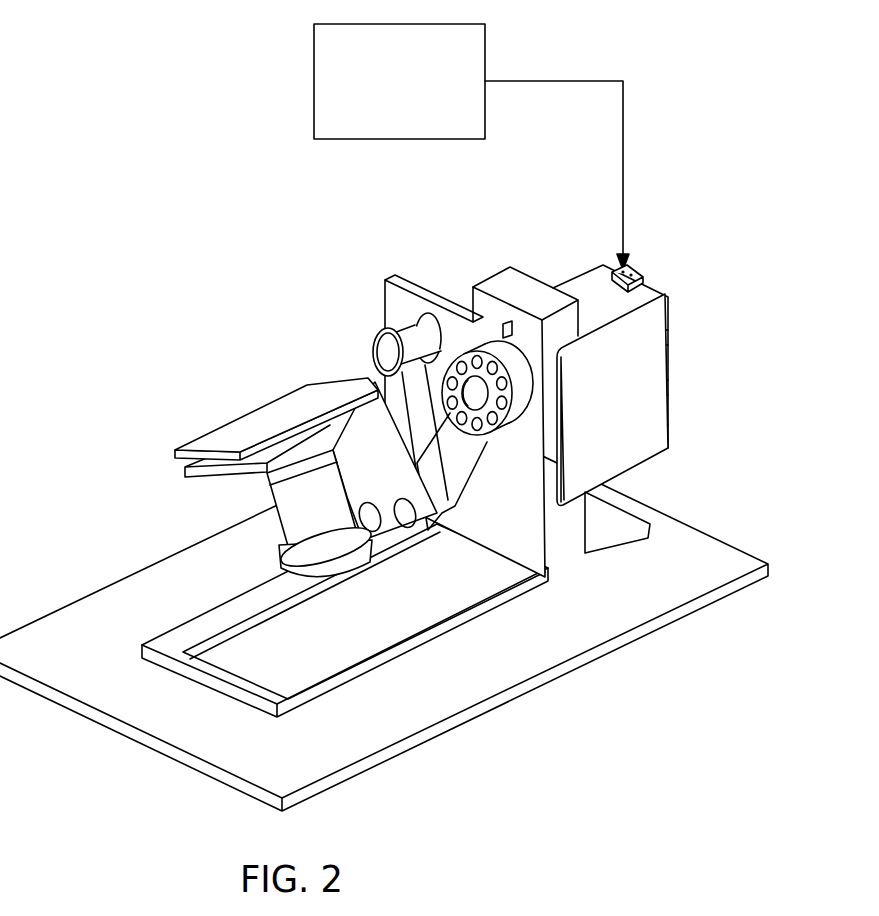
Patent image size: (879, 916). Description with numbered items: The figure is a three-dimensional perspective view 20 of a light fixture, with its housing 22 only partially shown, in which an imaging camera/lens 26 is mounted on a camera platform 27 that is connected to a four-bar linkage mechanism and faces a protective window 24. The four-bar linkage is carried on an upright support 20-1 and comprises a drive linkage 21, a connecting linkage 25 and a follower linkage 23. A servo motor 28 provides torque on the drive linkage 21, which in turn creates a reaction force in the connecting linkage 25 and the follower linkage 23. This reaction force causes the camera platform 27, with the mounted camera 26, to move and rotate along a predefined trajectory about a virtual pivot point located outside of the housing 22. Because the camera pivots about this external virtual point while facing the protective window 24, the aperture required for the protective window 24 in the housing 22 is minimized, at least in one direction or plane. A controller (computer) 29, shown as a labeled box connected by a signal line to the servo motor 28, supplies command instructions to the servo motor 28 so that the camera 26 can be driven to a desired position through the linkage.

The perspective view 20 is at (384, 417).
The upright support plate 20-1 is at (507, 288).
The drive linkage 21 is at (453, 460).
The housing 22 is at (188, 723).
The follower linkage 23 is at (380, 373).
The protective window 24 is at (328, 638).
The connecting linkage 25 is at (390, 540).
The imaging camera/lens 26 is at (262, 488).
The camera platform 27 is at (232, 435).
The servo motor 28 is at (645, 360).
The controller (computer) 29 is at (313, 80).